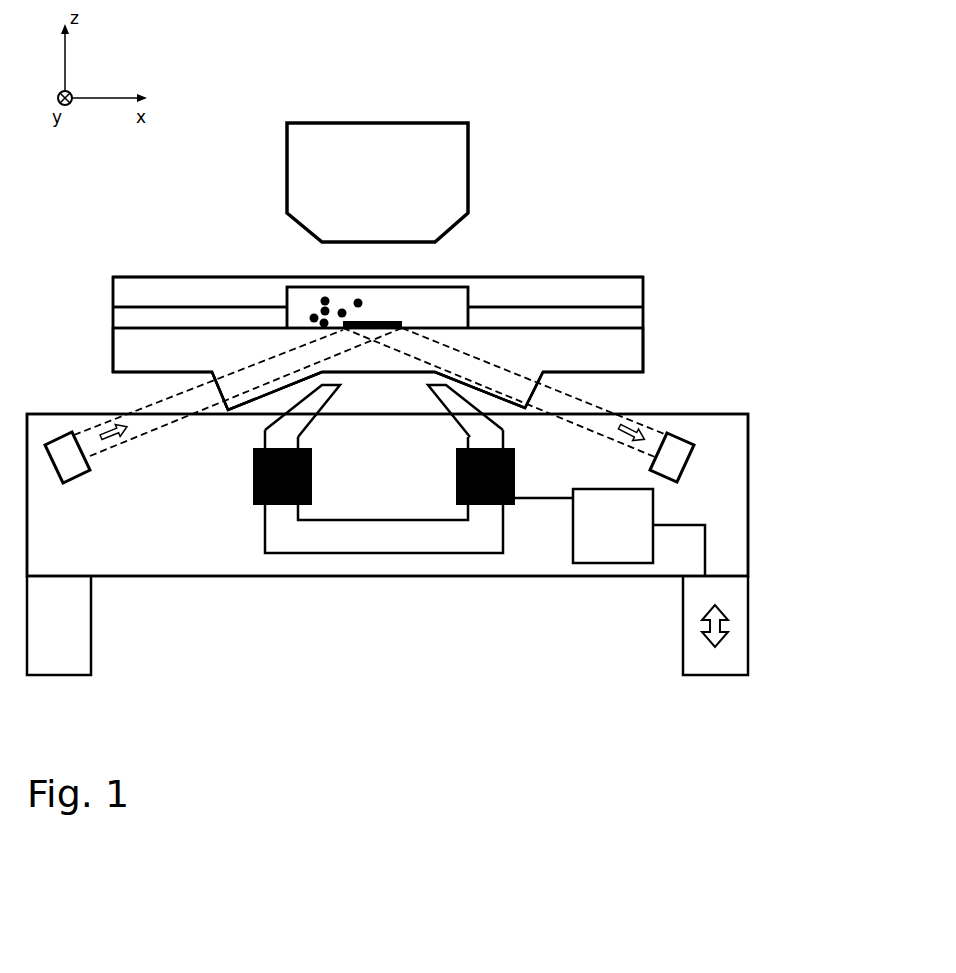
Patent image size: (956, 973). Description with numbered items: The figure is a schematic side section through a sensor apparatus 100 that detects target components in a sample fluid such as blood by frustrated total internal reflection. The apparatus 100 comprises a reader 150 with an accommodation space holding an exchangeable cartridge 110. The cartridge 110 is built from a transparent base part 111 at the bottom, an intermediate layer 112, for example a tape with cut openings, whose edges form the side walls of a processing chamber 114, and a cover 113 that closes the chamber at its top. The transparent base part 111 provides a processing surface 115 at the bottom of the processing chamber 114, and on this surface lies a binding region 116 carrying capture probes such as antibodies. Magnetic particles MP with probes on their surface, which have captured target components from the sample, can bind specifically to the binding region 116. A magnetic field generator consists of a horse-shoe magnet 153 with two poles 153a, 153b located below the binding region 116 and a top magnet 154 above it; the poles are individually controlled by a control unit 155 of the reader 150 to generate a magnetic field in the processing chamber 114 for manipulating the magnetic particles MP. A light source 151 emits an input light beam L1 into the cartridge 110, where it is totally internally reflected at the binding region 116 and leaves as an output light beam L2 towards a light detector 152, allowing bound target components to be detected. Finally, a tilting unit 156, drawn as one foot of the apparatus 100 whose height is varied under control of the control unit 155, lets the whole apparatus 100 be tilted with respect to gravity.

The sensor apparatus 100 is at (817, 300).
The cartridge 110 is at (752, 273).
The transparent base part 111 is at (625, 356).
The intermediate layer 112 is at (625, 319).
The cover 113 is at (625, 293).
The processing chamber 114 is at (458, 298).
The processing surface 115 is at (428, 322).
The binding region 116 is at (365, 322).
The magnetic particles MP is at (315, 317).
The reader 150 is at (735, 413).
The light source 151 is at (66, 448).
The light detector 152 is at (687, 458).
The horse-shoe magnet 153 is at (400, 548).
The first pole 153a is at (283, 517).
The second pole 153b is at (487, 515).
The top magnet 154 is at (413, 140).
The control unit 155 is at (639, 532).
The tilting unit 156 is at (740, 597).
The input light beam L1 is at (238, 392).
The output light beam L2 is at (505, 392).